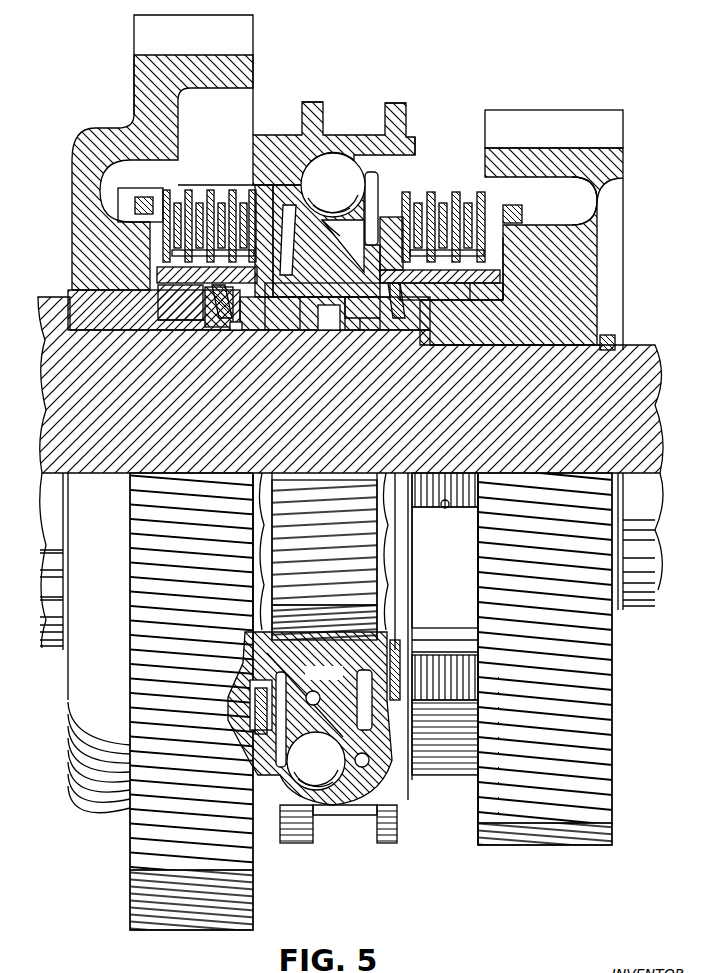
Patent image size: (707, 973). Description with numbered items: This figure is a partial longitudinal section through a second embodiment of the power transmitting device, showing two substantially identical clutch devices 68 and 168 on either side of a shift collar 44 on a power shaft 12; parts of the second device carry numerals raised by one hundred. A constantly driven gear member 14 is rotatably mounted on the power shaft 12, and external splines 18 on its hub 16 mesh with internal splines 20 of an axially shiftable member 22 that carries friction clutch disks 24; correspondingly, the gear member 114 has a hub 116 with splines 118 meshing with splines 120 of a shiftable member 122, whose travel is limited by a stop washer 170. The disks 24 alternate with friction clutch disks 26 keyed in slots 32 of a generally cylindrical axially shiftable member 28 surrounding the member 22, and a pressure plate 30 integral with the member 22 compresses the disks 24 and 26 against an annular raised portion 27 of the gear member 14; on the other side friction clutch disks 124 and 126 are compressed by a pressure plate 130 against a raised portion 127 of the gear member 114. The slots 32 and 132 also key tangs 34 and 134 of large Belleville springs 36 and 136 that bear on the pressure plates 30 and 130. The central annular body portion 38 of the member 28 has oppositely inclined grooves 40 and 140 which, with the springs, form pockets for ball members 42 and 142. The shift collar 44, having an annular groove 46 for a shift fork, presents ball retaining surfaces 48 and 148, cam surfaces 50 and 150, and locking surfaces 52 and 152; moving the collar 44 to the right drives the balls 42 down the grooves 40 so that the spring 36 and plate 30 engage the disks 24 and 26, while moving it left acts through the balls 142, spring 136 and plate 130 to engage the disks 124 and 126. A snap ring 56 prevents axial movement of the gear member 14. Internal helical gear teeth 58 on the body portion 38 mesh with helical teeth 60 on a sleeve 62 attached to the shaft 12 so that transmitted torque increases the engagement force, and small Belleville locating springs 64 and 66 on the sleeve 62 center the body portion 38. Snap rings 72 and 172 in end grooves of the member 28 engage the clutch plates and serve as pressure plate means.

The power shaft 12 is at (350, 385).
The constantly driven gear member 14 is at (521, 230).
The hub 16 is at (448, 347).
The external splines 18 is at (455, 300).
The internal splines 20 is at (482, 300).
The axially shiftable member 22 is at (490, 281).
The friction clutch disks 24 is at (462, 225).
The friction clutch disks 26 is at (420, 205).
The annular raised portion 27 is at (508, 246).
The axially shiftable member 28 is at (310, 495).
The pressure plate 30 is at (391, 231).
The slots 32 is at (513, 205).
The tangs 34 is at (378, 190).
The Belleville spring 36 is at (339, 228).
The annular body portion 38 is at (398, 658).
The grooves 40 is at (296, 240).
The ball members 42 is at (333, 185).
The shift collar 44 is at (279, 140).
The annular groove 46 is at (336, 135).
The ball retaining surfaces 48 is at (372, 147).
The cam surfaces 50 is at (306, 178).
The locking surfaces 52 is at (274, 188).
The snap ring 56 is at (616, 342).
The internal helical gear teeth 58 is at (292, 328).
The helical gear teeth 60 is at (358, 318).
The sleeve 62 is at (328, 330).
The Belleville locating spring 64 is at (258, 330).
The Belleville locating spring 66 is at (372, 330).
The clutch device 68 is at (449, 130).
The snap ring 72 is at (577, 199).
The constantly driven gear member 114 is at (154, 310).
The ring 116 is at (205, 330).
The ring 118 is at (212, 325).
The ring 120 is at (175, 322).
The sleeve 122 is at (157, 273).
The friction clutch disks 124 is at (232, 215).
The friction clutch disks 126 is at (190, 190).
The annular raised portion 127 is at (162, 152).
The pressure plate 130 is at (273, 255).
The slots 132 is at (142, 197).
The tangs 134 is at (283, 765).
The Belleville spring 136 is at (283, 703).
The grooves 140 is at (320, 698).
The ball members 142 is at (316, 761).
The ball retaining surfaces 148 is at (289, 806).
The cam surfaces 150 is at (316, 792).
The locking surfaces 152 is at (360, 768).
The clutch device 168 is at (209, 150).
The wedge pin 170 is at (224, 320).
The snap ring 172 is at (140, 190).